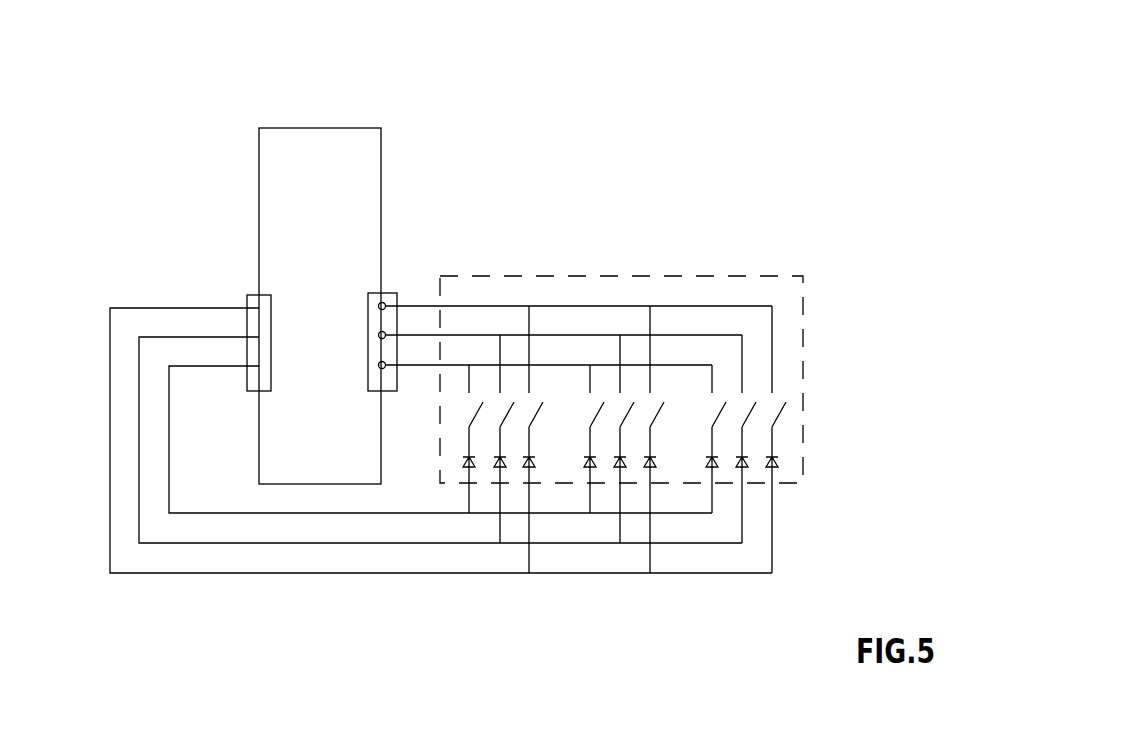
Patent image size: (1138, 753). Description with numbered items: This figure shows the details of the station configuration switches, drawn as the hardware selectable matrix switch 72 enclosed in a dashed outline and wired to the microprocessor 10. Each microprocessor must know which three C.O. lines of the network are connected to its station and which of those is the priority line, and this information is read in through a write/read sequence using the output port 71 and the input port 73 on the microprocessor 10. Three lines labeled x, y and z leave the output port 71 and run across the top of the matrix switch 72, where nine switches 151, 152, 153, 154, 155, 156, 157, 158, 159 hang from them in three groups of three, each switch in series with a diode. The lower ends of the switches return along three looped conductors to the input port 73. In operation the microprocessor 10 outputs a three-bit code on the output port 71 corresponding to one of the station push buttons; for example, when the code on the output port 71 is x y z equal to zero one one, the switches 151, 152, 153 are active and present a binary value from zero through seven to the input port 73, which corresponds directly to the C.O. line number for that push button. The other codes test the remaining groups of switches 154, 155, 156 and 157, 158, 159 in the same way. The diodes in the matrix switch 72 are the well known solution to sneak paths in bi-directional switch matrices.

The microprocessor 10 is at (343, 143).
The output port 71 is at (390, 298).
The station configuration switches 72 is at (725, 285).
The input port 73 is at (252, 300).
The switch 151 is at (462, 439).
The switch 152 is at (493, 439).
The switch 153 is at (522, 439).
The switch 154 is at (583, 439).
The switch 155 is at (613, 439).
The switch 156 is at (643, 439).
The switch 157 is at (705, 439).
The switch 158 is at (735, 439).
The switch 159 is at (765, 439).